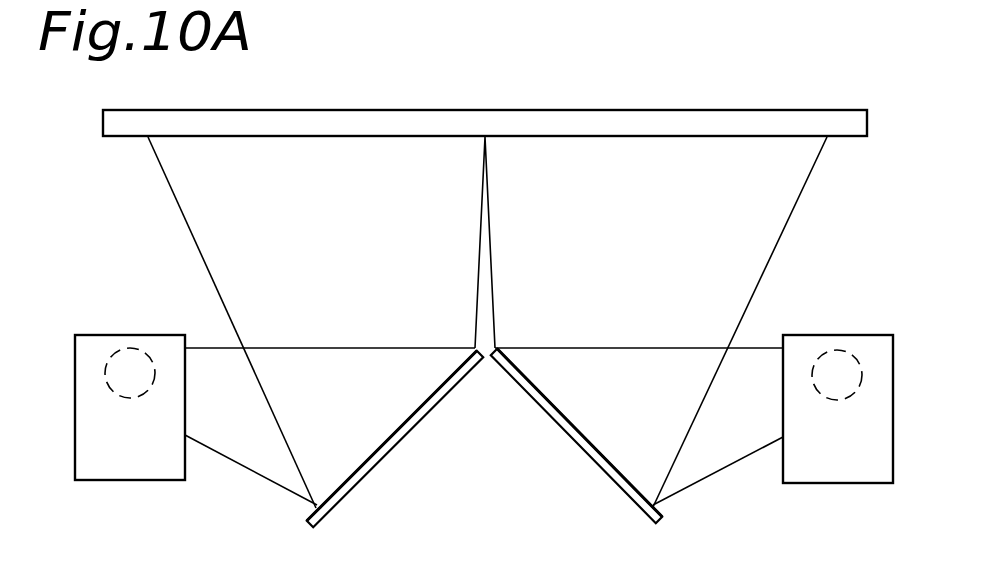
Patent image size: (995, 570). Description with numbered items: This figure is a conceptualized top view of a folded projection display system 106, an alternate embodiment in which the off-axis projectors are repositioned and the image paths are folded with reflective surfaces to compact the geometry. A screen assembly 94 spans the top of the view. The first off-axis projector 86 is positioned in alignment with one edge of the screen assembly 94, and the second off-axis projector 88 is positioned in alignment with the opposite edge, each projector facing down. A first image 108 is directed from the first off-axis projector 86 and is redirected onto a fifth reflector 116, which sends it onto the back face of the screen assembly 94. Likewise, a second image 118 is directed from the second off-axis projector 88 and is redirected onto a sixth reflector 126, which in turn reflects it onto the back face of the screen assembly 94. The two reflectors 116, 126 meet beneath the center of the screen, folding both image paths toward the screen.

The screen assembly 94 is at (353, 110).
The folded projection display system 106 is at (168, 232).
The first image 108 is at (340, 242).
The second image 118 is at (639, 305).
The first off-axis projector 86 is at (196, 420).
The second off-axis projector 88 is at (773, 420).
The fifth reflector 116 is at (367, 463).
The sixth reflector 126 is at (623, 487).